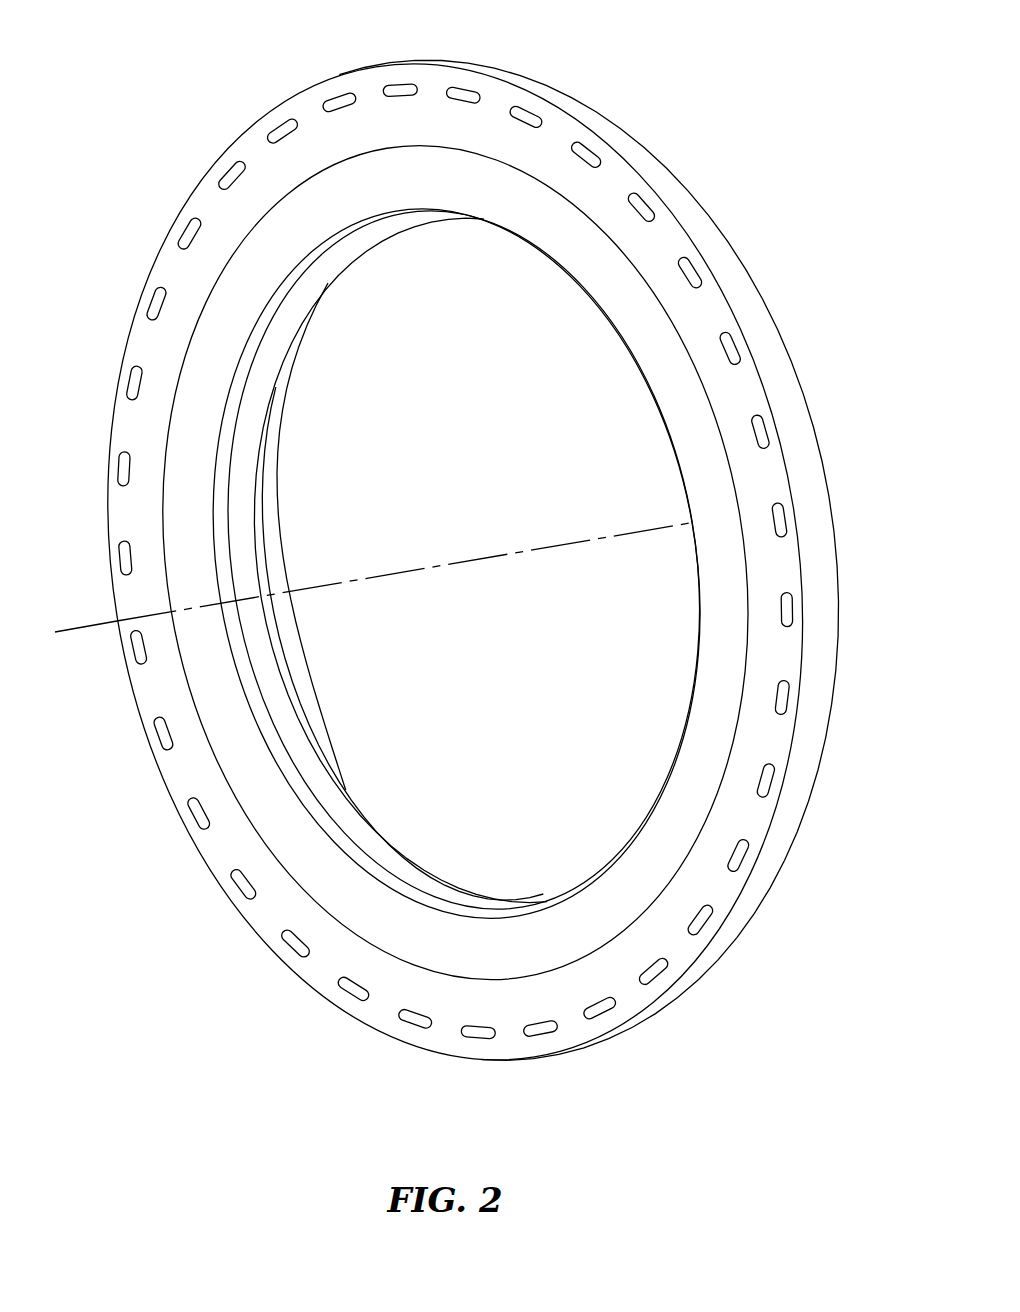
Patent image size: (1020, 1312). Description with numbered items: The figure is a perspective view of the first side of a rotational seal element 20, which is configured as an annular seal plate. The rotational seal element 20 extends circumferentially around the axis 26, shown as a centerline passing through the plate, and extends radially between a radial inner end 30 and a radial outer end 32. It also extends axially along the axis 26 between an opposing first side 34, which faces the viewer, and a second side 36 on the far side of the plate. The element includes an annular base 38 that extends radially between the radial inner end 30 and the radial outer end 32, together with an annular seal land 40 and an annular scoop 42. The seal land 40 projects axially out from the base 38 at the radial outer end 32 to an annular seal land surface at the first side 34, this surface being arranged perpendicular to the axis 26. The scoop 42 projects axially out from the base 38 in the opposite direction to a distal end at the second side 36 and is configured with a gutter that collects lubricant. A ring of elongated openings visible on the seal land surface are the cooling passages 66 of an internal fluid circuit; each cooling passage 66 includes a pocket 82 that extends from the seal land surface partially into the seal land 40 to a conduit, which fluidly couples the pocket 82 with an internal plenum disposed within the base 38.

The rotational seal element 20 is at (728, 92).
The axis 26 is at (90, 632).
The radial inner end 30 is at (513, 892).
The radial outer end 32 is at (501, 1070).
The first side 34 is at (195, 862).
The second side 36 is at (360, 767).
The annular base 38 is at (597, 285).
The annular seal land 40 is at (500, 146).
The annular scoop 42 is at (273, 541).
The cooling passages 66 is at (118, 569).
The pocket 82 is at (197, 816).